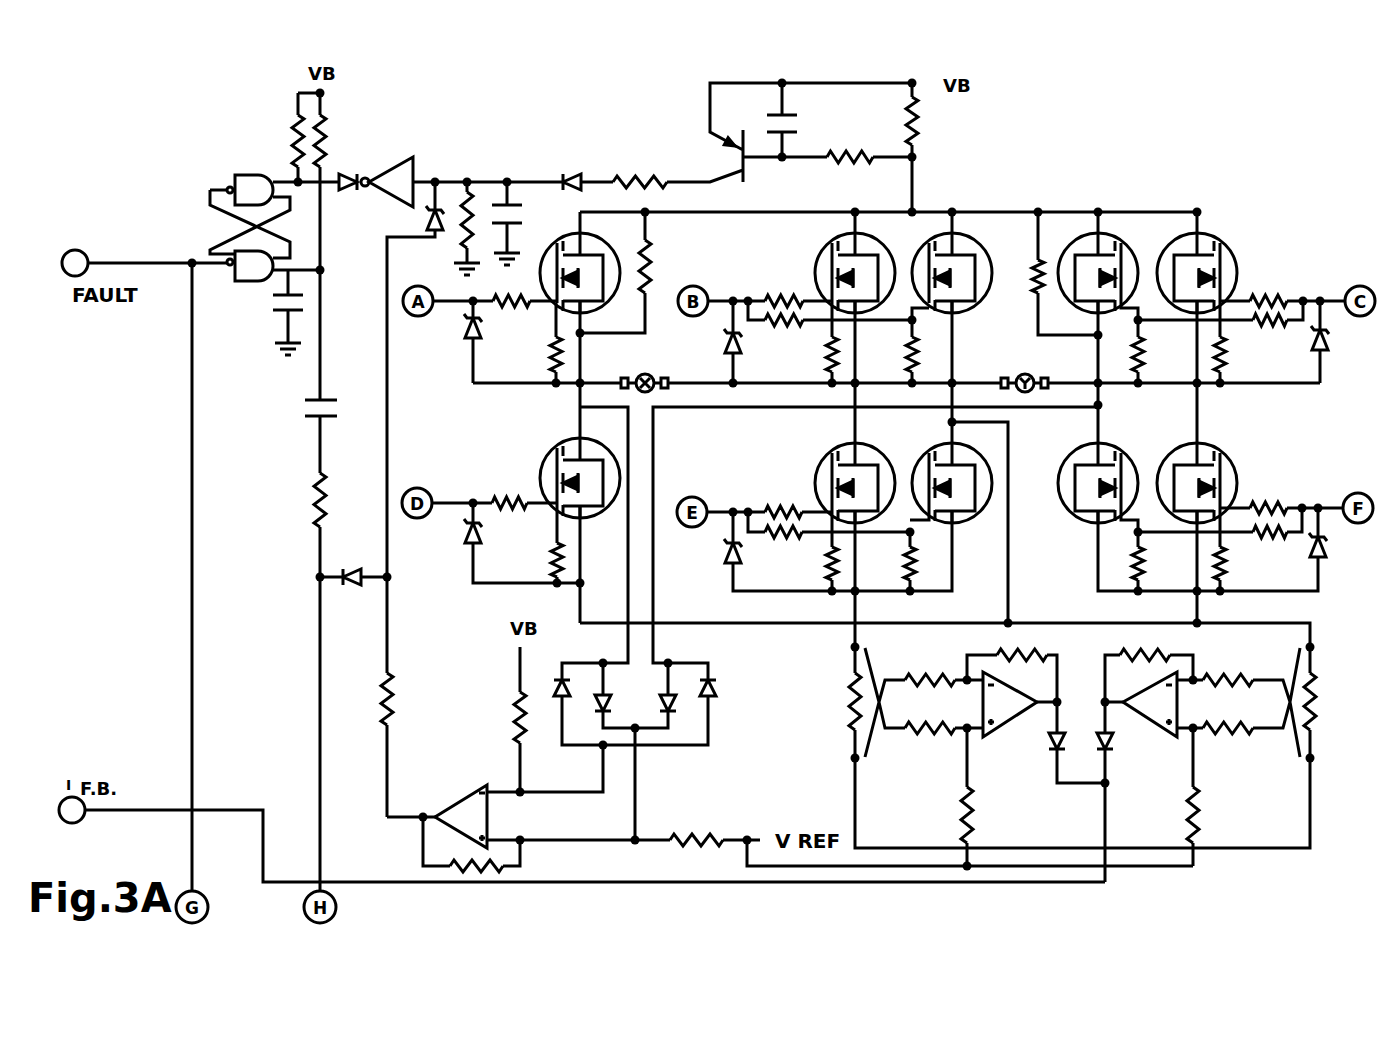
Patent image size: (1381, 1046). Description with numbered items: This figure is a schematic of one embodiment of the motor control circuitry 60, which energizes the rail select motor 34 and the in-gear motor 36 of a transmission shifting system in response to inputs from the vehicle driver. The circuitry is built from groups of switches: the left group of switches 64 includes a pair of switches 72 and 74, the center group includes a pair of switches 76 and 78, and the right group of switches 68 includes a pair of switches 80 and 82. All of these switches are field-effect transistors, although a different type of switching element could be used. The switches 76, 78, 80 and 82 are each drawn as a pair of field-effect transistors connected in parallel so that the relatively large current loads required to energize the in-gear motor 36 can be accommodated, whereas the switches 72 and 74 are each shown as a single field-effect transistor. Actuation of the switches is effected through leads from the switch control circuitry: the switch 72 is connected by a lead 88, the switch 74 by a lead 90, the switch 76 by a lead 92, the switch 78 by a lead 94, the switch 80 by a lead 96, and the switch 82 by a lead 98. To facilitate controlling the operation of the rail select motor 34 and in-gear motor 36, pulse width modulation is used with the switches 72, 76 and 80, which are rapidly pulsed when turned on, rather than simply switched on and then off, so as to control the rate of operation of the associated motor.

The rail select motor 34 is at (645, 372).
The in-gear motor 36 is at (935, 202).
The motor control circuitry 60 is at (1357, 578).
The left group of switches 64 is at (558, 205).
The right group of switches 68 is at (1160, 207).
The switch 72 is at (503, 290).
The switch 74 is at (540, 448).
The switch 76 is at (810, 255).
The switch 78 is at (817, 457).
The switch 80 is at (1250, 270).
The switch 82 is at (1244, 462).
The lead 88 is at (455, 312).
The lead 90 is at (447, 510).
The lead 92 is at (720, 293).
The lead 94 is at (723, 510).
The lead 96 is at (1322, 293).
The lead 98 is at (1330, 503).